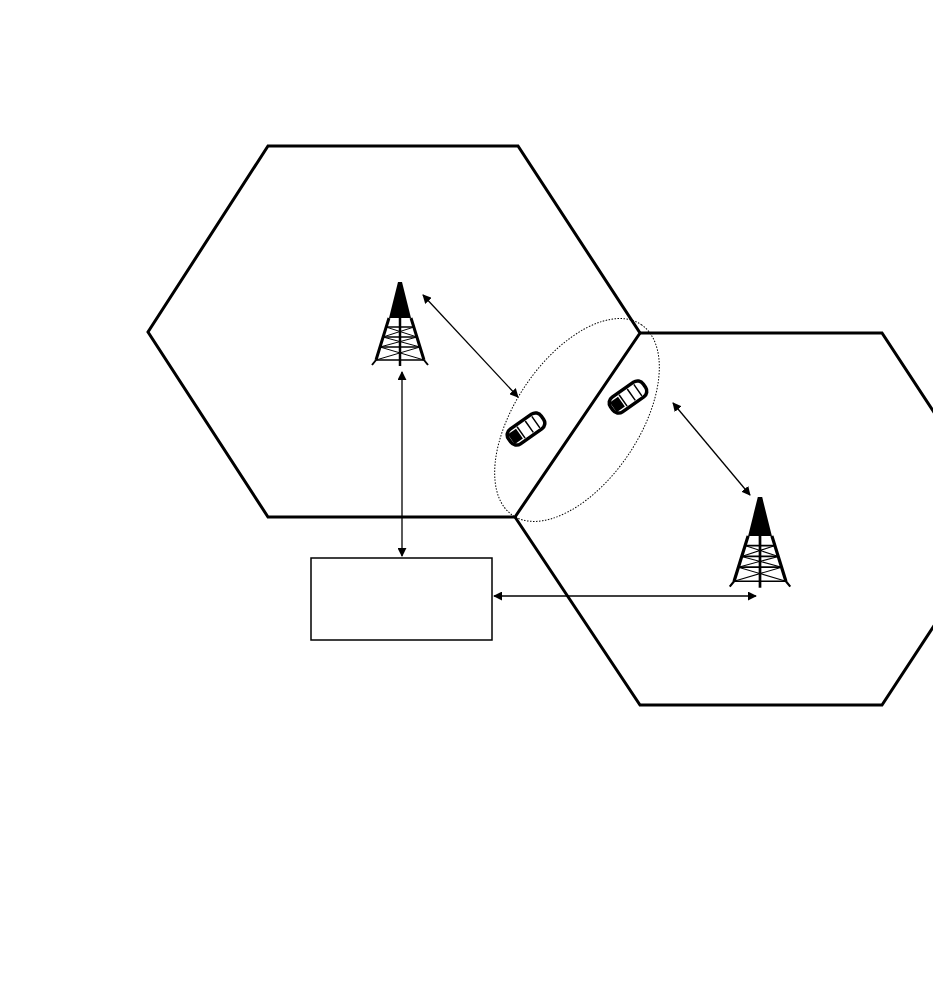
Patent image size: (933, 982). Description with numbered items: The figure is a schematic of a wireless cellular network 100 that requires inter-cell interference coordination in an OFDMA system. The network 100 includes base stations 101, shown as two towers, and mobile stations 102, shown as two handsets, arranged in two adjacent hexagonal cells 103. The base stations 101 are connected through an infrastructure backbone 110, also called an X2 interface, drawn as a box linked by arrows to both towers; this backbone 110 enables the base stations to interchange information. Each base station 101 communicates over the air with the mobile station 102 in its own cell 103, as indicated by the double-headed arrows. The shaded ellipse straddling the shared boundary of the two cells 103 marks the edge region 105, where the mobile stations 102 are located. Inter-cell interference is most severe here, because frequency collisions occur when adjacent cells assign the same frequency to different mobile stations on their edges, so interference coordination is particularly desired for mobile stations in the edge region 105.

The wireless cellular network 100 is at (592, 803).
The base station 101 is at (388, 315).
The mobile station 102 is at (653, 393).
The cell 103 is at (359, 146).
The edge region 105 is at (578, 328).
The infrastructure backbone 110 is at (310, 578).